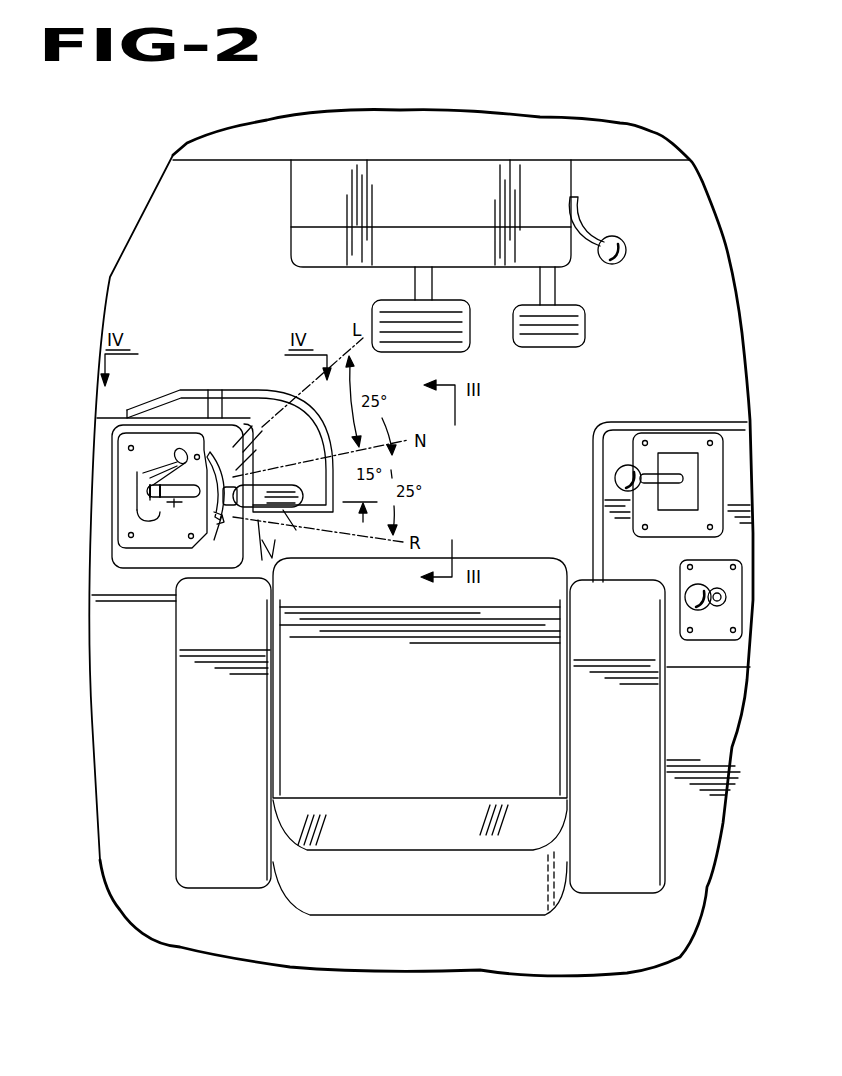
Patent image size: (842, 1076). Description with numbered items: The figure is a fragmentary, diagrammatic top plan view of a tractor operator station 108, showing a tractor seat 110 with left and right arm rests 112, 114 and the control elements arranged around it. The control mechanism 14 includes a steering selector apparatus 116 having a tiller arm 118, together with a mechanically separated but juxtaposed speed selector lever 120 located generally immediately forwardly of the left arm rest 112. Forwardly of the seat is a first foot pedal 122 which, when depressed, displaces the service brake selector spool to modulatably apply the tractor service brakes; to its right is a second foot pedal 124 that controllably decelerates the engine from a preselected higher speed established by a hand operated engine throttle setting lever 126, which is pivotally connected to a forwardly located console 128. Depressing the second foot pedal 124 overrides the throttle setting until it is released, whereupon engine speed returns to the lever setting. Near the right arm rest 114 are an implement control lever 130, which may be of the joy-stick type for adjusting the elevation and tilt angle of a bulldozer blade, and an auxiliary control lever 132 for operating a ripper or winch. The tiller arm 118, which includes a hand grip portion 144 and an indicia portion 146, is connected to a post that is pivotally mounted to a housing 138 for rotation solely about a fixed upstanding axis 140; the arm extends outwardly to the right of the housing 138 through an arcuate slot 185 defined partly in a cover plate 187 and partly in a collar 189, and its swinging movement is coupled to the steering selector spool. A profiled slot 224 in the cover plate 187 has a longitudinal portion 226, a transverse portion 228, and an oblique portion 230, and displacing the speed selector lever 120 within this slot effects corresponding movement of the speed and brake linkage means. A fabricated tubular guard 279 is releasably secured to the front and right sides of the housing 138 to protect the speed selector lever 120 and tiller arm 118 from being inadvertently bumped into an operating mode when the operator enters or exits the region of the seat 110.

The tractor operator station 108 is at (160, 215).
The console 128 is at (455, 205).
The first foot pedal 122 is at (392, 322).
The second foot pedal 124 is at (572, 320).
The engine throttle setting lever 126 is at (626, 241).
The tubular guard 279 is at (250, 358).
The housing 138 is at (110, 418).
The collar 189 is at (120, 560).
The cover plate 187 is at (137, 445).
The transverse portion 228 is at (143, 470).
The profiled slot 224 is at (153, 525).
The longitudinal portion 226 is at (150, 492).
The oblique portion 230 is at (167, 463).
The speed selector lever 120 is at (183, 485).
The tiller arm 118 is at (258, 486).
The upstanding axis 140 is at (177, 506).
The arcuate slot 185 is at (226, 522).
The indicia portion 146 is at (263, 525).
The hand grip portion 144 is at (290, 516).
The steering selector apparatus 116 is at (272, 560).
The control mechanism 14 is at (145, 578).
The tractor seat 110 is at (488, 550).
The left arm rest 112 is at (248, 638).
The right arm rest 114 is at (640, 637).
The implement control lever 130 is at (618, 472).
The auxiliary control lever 132 is at (688, 592).